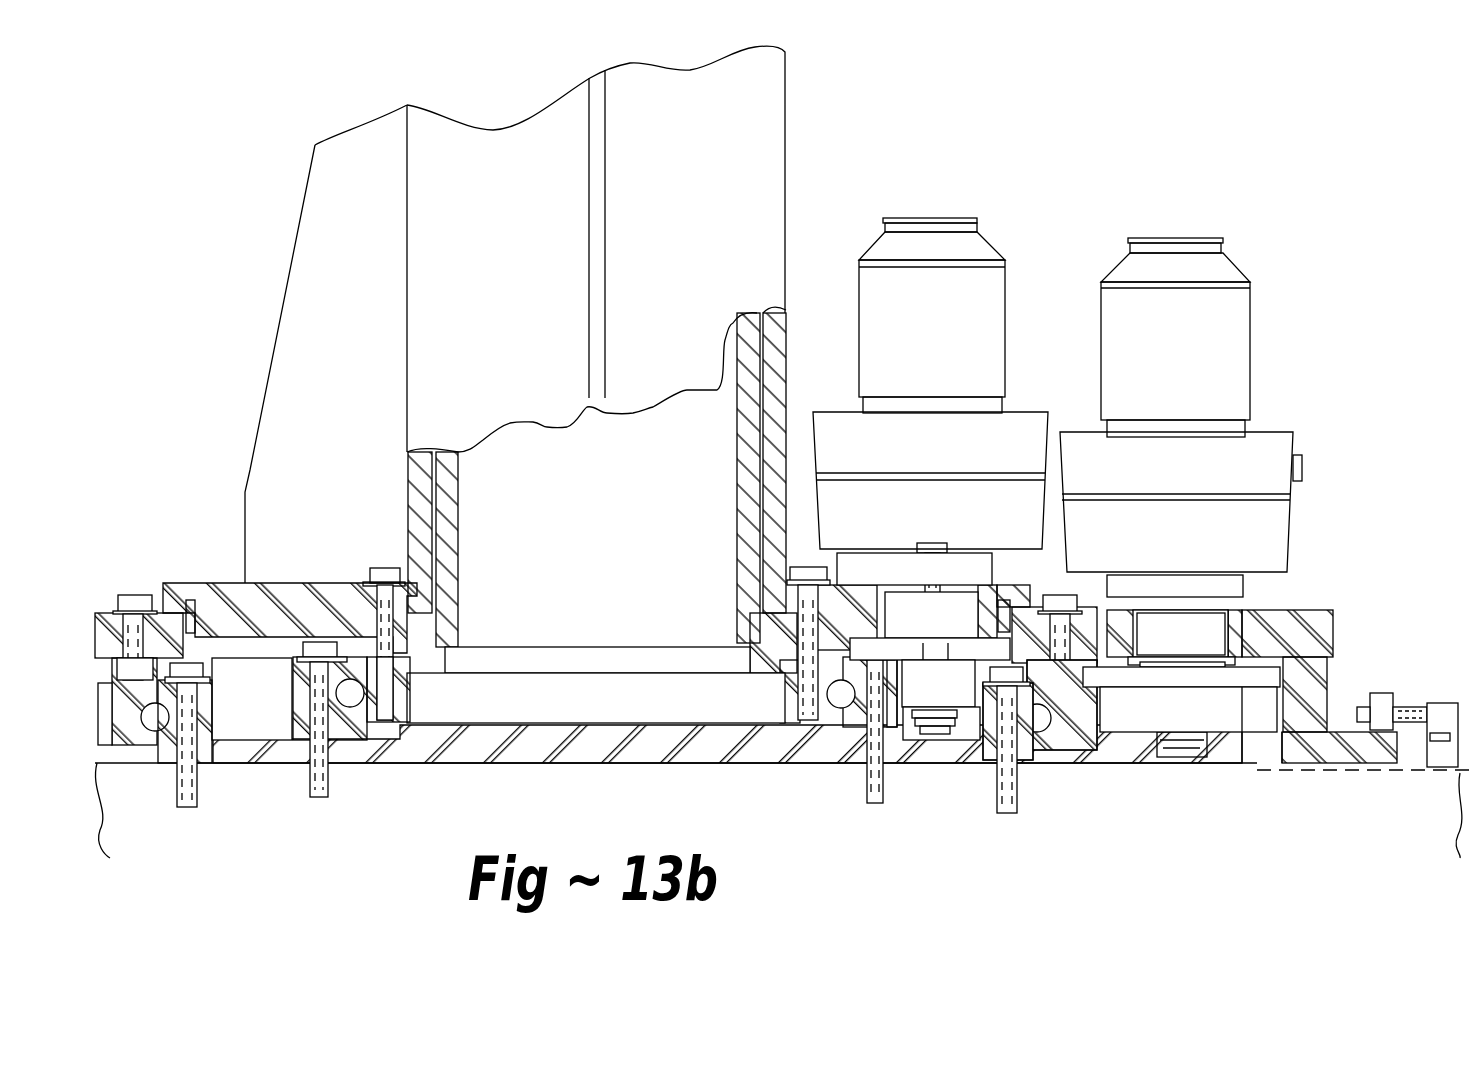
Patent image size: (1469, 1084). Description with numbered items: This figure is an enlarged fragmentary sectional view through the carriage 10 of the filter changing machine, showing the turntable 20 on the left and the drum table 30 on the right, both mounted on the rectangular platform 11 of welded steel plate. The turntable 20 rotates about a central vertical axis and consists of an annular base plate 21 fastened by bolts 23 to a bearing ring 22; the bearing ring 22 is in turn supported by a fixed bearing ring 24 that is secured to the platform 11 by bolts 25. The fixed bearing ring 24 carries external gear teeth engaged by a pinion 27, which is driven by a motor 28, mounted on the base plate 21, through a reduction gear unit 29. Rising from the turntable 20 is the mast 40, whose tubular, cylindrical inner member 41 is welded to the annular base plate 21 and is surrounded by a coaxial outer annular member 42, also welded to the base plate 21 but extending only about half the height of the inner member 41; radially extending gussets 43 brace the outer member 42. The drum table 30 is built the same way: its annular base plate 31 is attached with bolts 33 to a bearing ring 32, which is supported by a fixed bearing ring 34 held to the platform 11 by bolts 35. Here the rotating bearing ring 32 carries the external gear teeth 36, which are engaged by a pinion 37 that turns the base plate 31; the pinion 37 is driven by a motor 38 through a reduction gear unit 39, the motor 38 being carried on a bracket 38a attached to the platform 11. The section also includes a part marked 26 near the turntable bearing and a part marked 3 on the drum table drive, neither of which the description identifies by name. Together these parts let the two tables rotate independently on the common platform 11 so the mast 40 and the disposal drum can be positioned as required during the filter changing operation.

The carriage 10 is at (1259, 530).
The platform 11 is at (650, 728).
The turntable 20 is at (577, 647).
The annular base plate 21 is at (312, 583).
The bearing ring 22 is at (410, 702).
The bolts 23 is at (385, 568).
The fixed bearing ring 24 is at (350, 745).
The bolts 25 is at (327, 640).
The spacer 26 is at (294, 705).
The pinion 27 is at (950, 697).
The motor 28 is at (932, 315).
The reduction gear unit 29 is at (930, 536).
The mount base 3 is at (1176, 523).
The drum table 30 is at (666, 688).
The annular base plate 31 is at (1180, 560).
The bearing ring 32 is at (175, 745).
The bolts 33 is at (130, 595).
The fixed bearing ring 34 is at (213, 733).
The bolts 35 is at (197, 807).
The external gear teeth 36 is at (1100, 740).
The pinion 37 is at (1203, 710).
The motor 38 is at (1175, 337).
The bracket 38a is at (1318, 605).
The reduction gear unit 39 is at (1181, 502).
The mast 40 is at (815, 125).
The inner member 41 is at (735, 440).
The outer member 42 is at (407, 355).
The gussets 43 is at (283, 292).